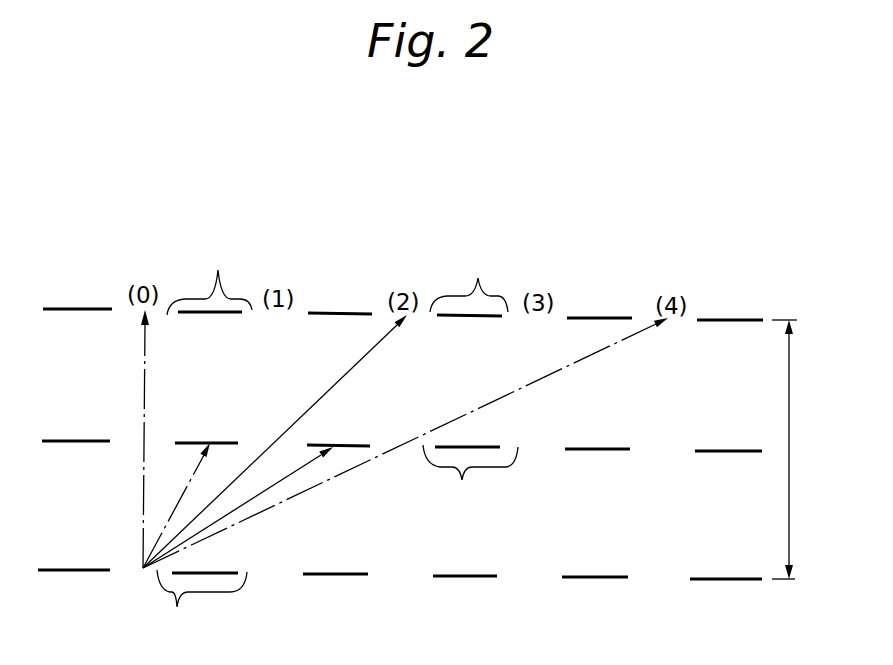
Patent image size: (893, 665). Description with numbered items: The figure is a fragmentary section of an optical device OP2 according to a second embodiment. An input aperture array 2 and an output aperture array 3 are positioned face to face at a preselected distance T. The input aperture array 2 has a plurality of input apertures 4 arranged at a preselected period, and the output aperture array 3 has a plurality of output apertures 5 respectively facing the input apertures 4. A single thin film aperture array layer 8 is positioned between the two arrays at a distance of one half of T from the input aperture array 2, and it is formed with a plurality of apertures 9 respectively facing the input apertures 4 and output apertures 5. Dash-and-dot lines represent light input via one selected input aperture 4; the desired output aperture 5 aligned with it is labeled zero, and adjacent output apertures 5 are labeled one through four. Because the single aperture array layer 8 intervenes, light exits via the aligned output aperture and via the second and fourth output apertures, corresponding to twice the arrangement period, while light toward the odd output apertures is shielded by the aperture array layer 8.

The input aperture array 2 is at (718, 582).
The output aperture array 3 is at (723, 318).
The input apertures 4 is at (202, 605).
The output apertures 5 is at (337, 278).
The thin film aperture array layer 8 is at (595, 452).
The apertures 9 is at (127, 440).
The optical device OP2 is at (142, 245).
The distance between input aperture array and output aperture array T is at (791, 449).